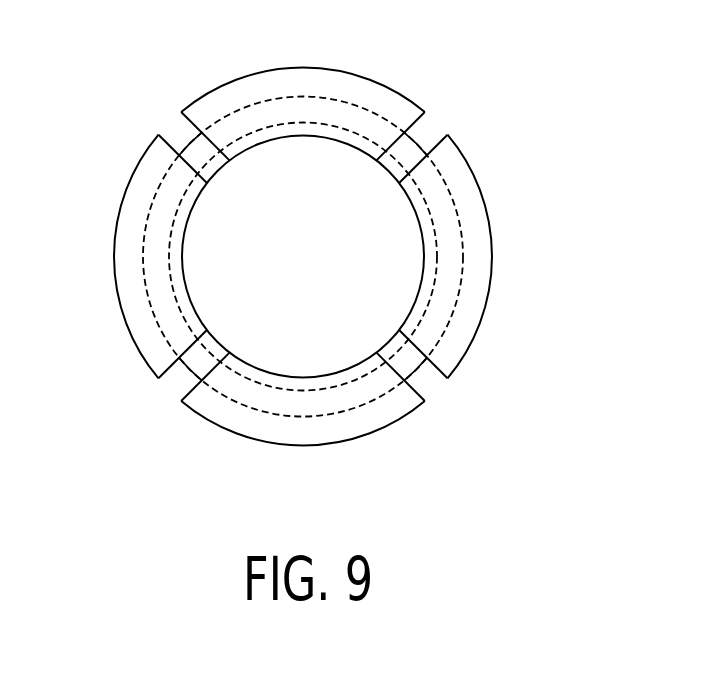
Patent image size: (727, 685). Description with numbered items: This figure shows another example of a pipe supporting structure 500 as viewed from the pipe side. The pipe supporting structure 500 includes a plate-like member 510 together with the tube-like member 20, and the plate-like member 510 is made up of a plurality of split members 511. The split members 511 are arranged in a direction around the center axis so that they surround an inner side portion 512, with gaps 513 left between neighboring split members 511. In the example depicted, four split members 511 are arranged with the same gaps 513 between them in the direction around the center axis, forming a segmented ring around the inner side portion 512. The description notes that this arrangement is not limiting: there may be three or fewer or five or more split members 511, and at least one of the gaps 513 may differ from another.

The pipe supporting structure 500 is at (422, 62).
The plate-like member 510 is at (238, 80).
The split members 511 is at (337, 82).
The inner side portion 512 is at (373, 272).
The gaps 513 is at (178, 130).
The tube-like member 20 is at (425, 378).